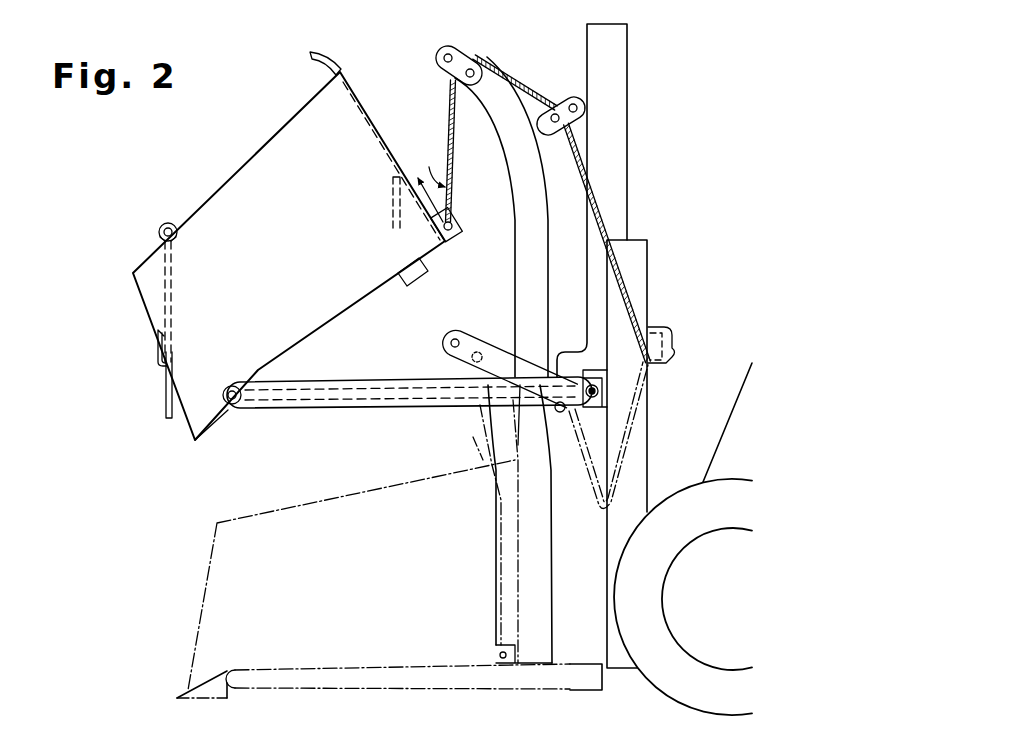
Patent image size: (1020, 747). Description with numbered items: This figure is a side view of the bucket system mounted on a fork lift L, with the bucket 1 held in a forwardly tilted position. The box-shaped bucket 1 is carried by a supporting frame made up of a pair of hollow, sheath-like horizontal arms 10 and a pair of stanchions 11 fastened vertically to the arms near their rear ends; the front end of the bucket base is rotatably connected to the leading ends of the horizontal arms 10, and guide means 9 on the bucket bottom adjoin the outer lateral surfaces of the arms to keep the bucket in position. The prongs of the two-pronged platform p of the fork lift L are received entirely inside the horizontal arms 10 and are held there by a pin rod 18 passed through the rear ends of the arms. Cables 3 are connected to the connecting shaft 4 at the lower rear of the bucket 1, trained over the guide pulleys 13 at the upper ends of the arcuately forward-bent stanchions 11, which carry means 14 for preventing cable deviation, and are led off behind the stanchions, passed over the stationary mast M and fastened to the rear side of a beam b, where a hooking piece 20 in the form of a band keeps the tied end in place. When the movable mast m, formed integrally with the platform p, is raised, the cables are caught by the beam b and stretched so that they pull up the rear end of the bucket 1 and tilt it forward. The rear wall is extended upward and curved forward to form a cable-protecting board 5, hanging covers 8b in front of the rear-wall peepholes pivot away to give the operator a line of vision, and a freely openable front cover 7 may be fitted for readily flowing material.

The bucket 1 is at (235, 195).
The cables 3 is at (458, 161).
The connecting shaft 4 is at (452, 237).
The cable-protecting board 5 is at (318, 61).
The front cover 7 is at (166, 394).
The hanging covers 8b is at (393, 211).
The guide means 9 is at (405, 289).
The horizontal arms 10 is at (265, 409).
The stanchions 11 is at (516, 298).
The guide pulleys 13 is at (478, 58).
The cable deviation preventing means 14 is at (441, 57).
The pin rod 18 is at (597, 394).
The hooking piece 20 is at (676, 334).
The movable mast m is at (634, 170).
The stationary mast M is at (651, 268).
The beam b is at (665, 362).
The two-pronged platform p is at (383, 402).
The fork lift L is at (658, 692).